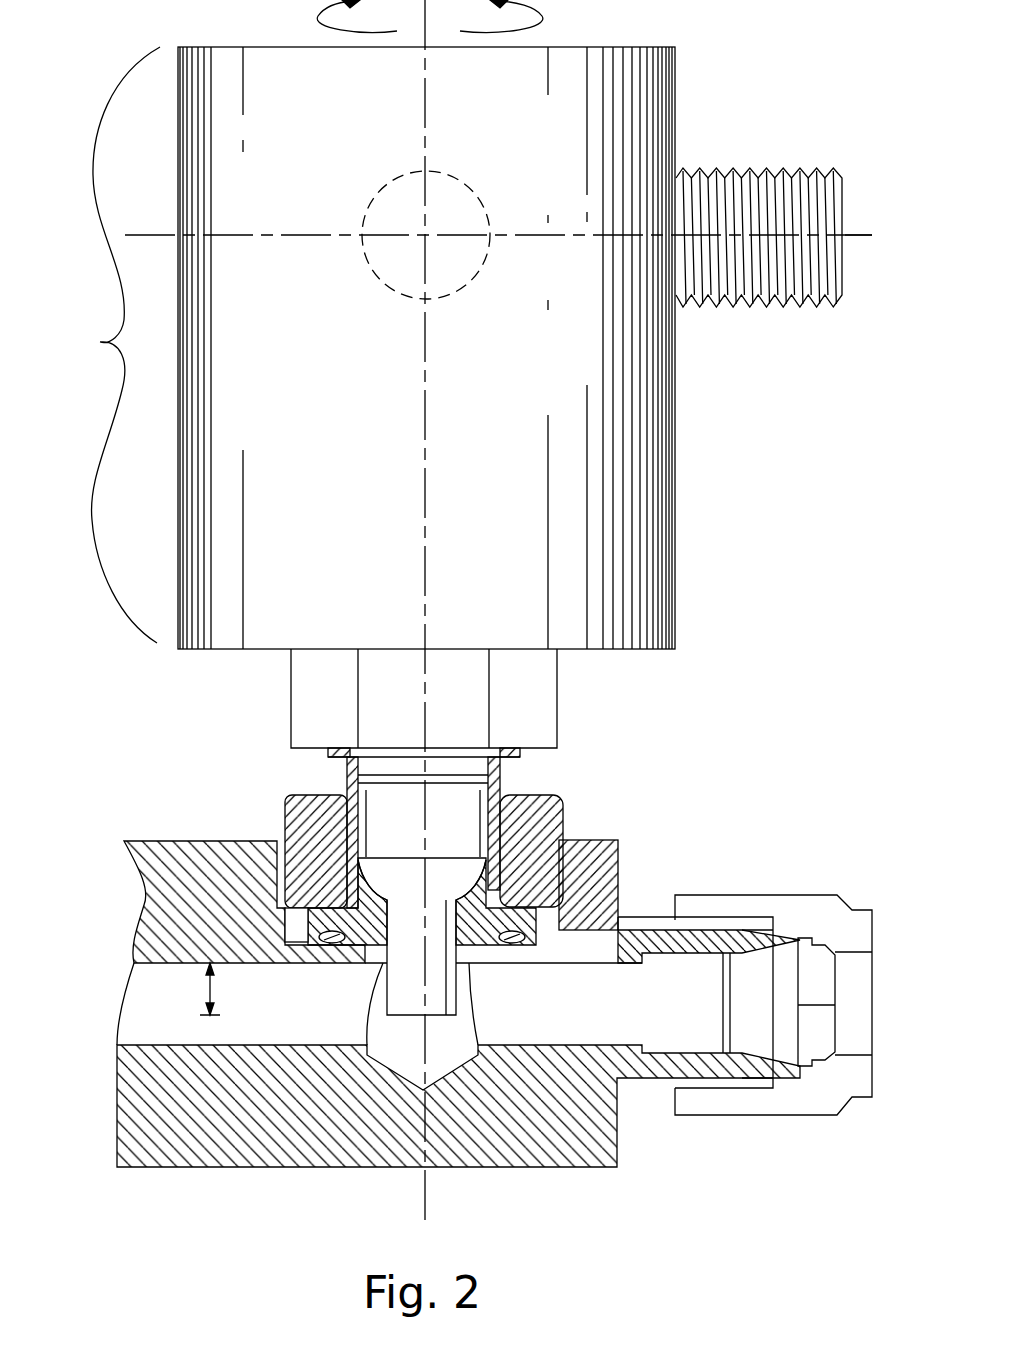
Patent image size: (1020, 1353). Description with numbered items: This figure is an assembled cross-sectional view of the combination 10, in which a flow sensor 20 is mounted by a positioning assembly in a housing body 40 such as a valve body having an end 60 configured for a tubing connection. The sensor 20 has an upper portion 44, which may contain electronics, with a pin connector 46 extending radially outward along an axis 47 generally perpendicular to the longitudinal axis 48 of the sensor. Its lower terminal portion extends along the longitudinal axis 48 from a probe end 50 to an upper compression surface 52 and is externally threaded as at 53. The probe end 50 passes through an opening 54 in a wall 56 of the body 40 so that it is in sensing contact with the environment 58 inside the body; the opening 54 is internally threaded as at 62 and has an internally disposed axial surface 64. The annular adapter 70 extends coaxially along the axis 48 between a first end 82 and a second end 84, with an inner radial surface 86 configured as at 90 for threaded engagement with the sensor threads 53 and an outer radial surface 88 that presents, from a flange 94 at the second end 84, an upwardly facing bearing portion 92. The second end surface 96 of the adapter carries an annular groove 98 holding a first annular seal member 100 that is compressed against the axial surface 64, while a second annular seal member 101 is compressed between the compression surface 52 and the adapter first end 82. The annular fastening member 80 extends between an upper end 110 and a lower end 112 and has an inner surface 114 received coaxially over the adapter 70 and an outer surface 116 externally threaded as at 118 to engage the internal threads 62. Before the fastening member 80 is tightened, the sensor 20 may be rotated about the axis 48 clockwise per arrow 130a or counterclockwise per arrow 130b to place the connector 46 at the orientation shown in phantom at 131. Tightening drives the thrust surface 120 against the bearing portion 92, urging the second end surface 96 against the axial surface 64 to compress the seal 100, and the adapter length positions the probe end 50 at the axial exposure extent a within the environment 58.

The combination 10 is at (822, 380).
The flow sensor 20 is at (758, 530).
The housing body 40 is at (848, 1155).
The upper portion 44 is at (100, 342).
The pin connector 46 is at (800, 168).
The axis 47 is at (855, 236).
The longitudinal axis 48 is at (430, 127).
The probe end 50 is at (604, 1029).
The compression surface 52 is at (335, 752).
The external threads 53 is at (500, 770).
The opening 54 is at (484, 930).
The wall 56 is at (709, 965).
The environment 58 is at (458, 1088).
The end 60 is at (805, 893).
The internal threads 62 is at (215, 926).
The axial surface 64 is at (333, 905).
The adapter 70 is at (510, 790).
The fastening member 80 is at (252, 845).
The first end 82 is at (427, 753).
The second end 84 is at (549, 931).
The inner radial surface 86 is at (315, 949).
The outer radial surface 88 is at (350, 843).
The threaded configuration 90 is at (360, 805).
The bearing portion 92 is at (215, 926).
The flange 94 is at (315, 949).
The second end surface 96 is at (315, 949).
The annular groove 98 is at (547, 950).
The first annular seal member 100 is at (312, 947).
The second annular seal member 101 is at (355, 745).
The upper end 110 is at (598, 822).
The lower end 112 is at (215, 926).
The inner surface 114 is at (598, 822).
The outer surface 116 is at (598, 822).
The external threads 118 is at (575, 866).
The axial thrust surface 120 is at (668, 918).
The arrow 130a is at (318, 16).
The arrow 130b is at (542, 16).
The angular orientation 131 is at (492, 207).
The axial exposure extent a is at (205, 990).